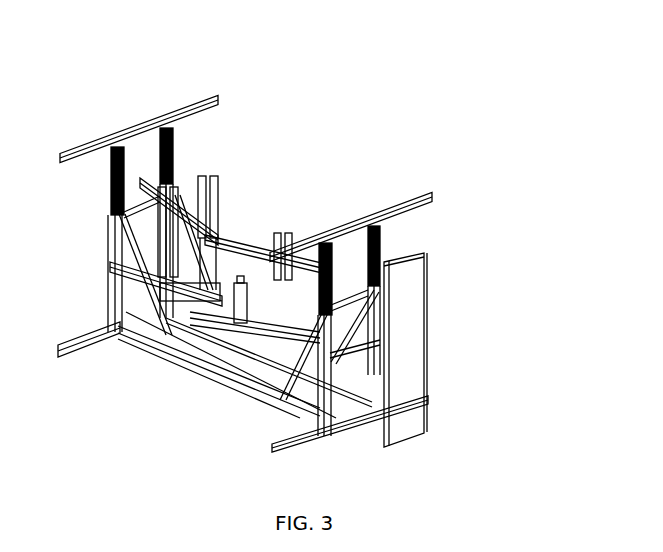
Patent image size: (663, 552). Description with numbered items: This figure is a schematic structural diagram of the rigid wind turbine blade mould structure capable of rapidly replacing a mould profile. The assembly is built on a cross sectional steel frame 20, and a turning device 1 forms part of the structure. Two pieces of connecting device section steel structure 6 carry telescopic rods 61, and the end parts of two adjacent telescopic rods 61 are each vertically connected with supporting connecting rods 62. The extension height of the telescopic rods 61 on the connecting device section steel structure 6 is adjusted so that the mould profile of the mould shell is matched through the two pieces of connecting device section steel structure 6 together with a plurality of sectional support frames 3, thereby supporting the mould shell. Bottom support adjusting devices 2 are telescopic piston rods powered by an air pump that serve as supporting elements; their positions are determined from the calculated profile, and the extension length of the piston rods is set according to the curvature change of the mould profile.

The turning device 1 is at (410, 310).
The bottom support adjusting device 2 is at (222, 222).
The sectional support frame 3 is at (245, 246).
The connecting device section steel structure 6 is at (355, 378).
The cross sectional steel frame 20 is at (265, 425).
The telescopic rod 61 is at (378, 250).
The supporting connecting rod 62 is at (145, 117).